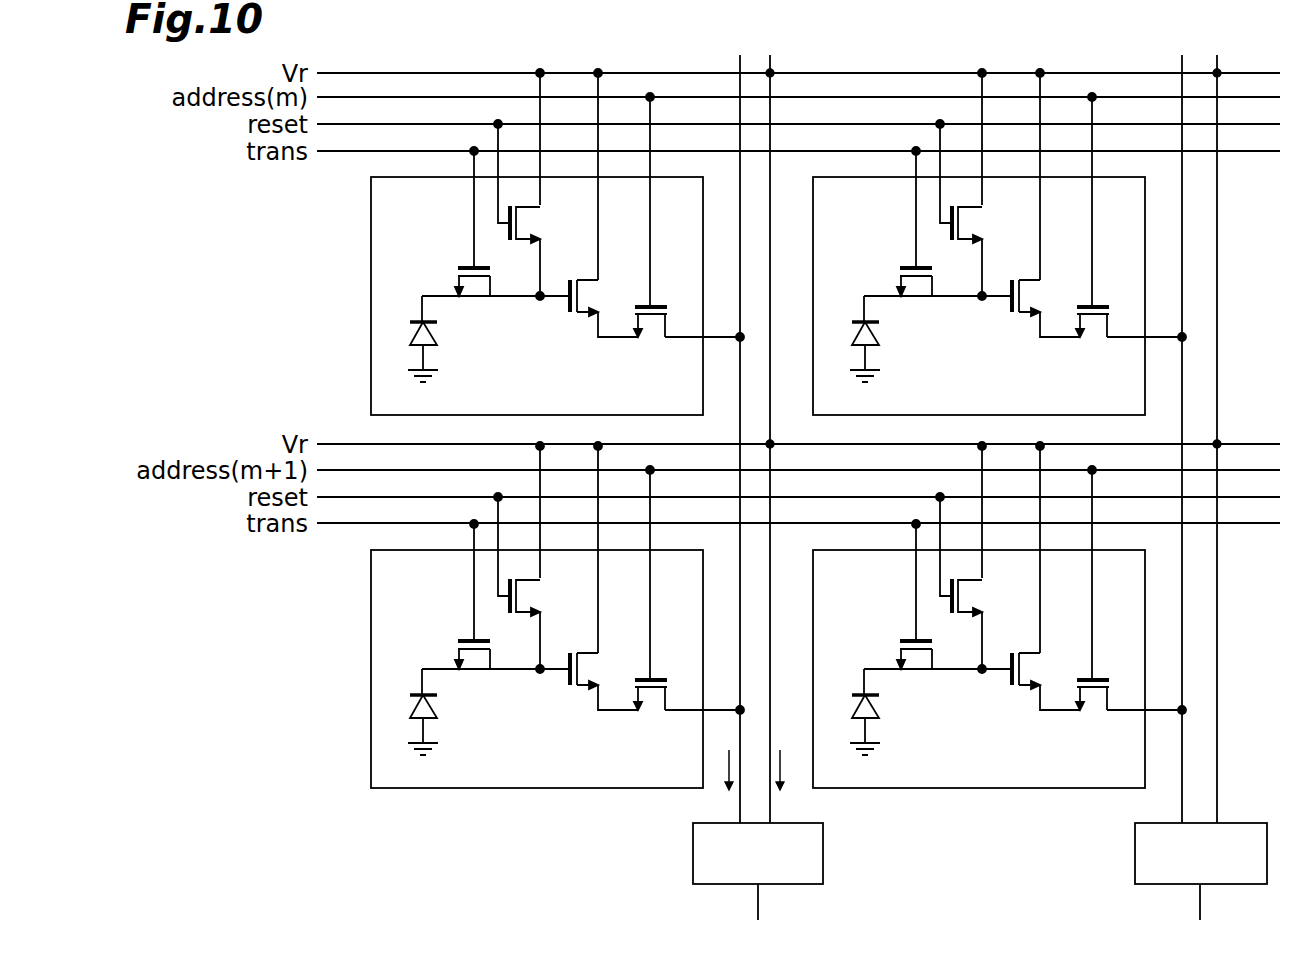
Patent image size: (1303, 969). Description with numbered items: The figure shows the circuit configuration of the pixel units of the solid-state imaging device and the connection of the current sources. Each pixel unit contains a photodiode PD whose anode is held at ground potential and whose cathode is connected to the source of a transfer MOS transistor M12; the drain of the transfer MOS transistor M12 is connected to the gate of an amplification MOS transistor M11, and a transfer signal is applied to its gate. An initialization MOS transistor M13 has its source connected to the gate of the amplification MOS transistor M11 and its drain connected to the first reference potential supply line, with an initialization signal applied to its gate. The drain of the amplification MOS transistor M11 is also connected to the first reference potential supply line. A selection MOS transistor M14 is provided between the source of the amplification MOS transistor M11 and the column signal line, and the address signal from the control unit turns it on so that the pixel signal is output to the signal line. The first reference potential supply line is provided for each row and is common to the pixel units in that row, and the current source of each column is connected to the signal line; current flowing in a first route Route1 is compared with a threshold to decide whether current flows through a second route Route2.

The amplification MOS transistor M11 is at (580, 314).
The transfer MOS transistor M12 is at (460, 266).
The initialization MOS transistor M13 is at (570, 211).
The selection MOS transistor M14 is at (664, 325).
The photodiode PD is at (438, 330).
The first route Route1 is at (718, 755).
The second route Route2 is at (795, 748).